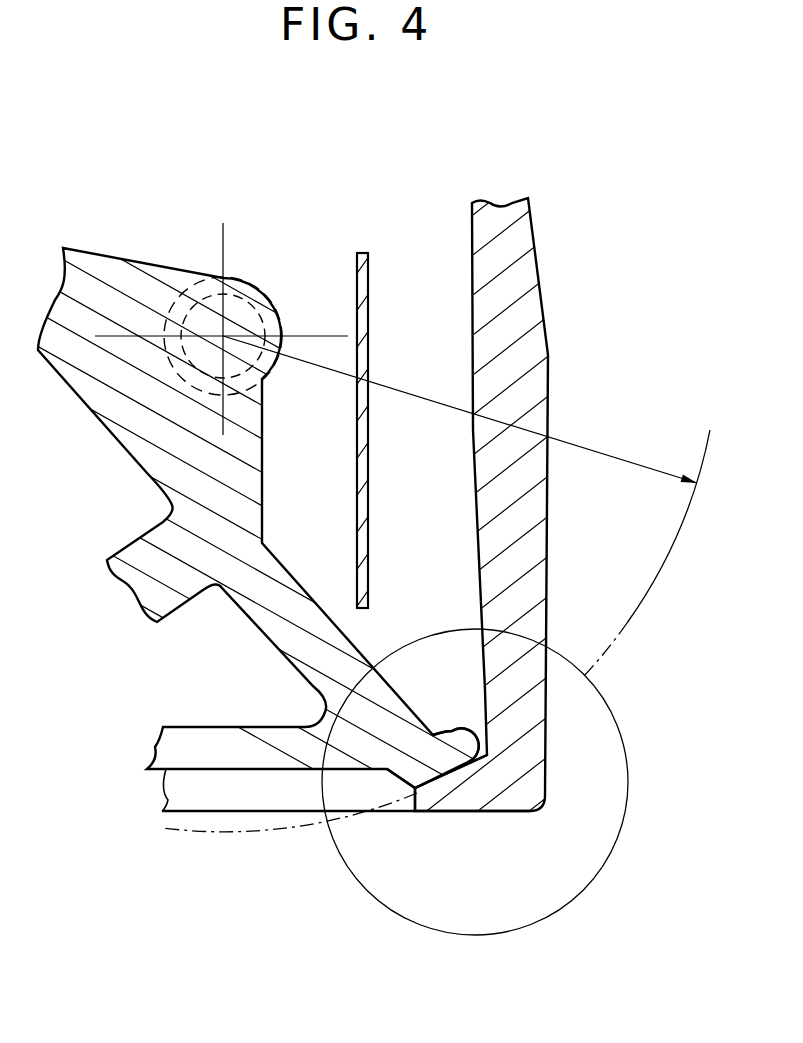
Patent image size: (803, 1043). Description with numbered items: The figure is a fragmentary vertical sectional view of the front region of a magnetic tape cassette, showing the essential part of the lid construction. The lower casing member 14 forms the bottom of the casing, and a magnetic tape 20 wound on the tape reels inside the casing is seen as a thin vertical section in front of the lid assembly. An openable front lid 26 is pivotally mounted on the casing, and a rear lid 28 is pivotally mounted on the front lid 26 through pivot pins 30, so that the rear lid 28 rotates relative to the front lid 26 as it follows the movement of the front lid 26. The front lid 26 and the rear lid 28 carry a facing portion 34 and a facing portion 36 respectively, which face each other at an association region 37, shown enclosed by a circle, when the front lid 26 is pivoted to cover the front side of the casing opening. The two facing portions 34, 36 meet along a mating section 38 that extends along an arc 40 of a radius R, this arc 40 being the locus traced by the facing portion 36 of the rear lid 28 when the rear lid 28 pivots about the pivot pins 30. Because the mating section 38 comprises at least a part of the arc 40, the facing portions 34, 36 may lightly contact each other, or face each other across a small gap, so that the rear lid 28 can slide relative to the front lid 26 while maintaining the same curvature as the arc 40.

The lower casing member 14 is at (222, 802).
The magnetic tape 20 is at (369, 277).
The front lid 26 is at (540, 304).
The rear lid 28 is at (240, 596).
The pivot pins 30 is at (257, 307).
The facing portion 34 is at (447, 764).
The facing portion 36 is at (438, 796).
The association region 37 is at (625, 741).
The mating section 38 is at (463, 768).
The arc 40 is at (674, 542).
The radius R is at (586, 446).